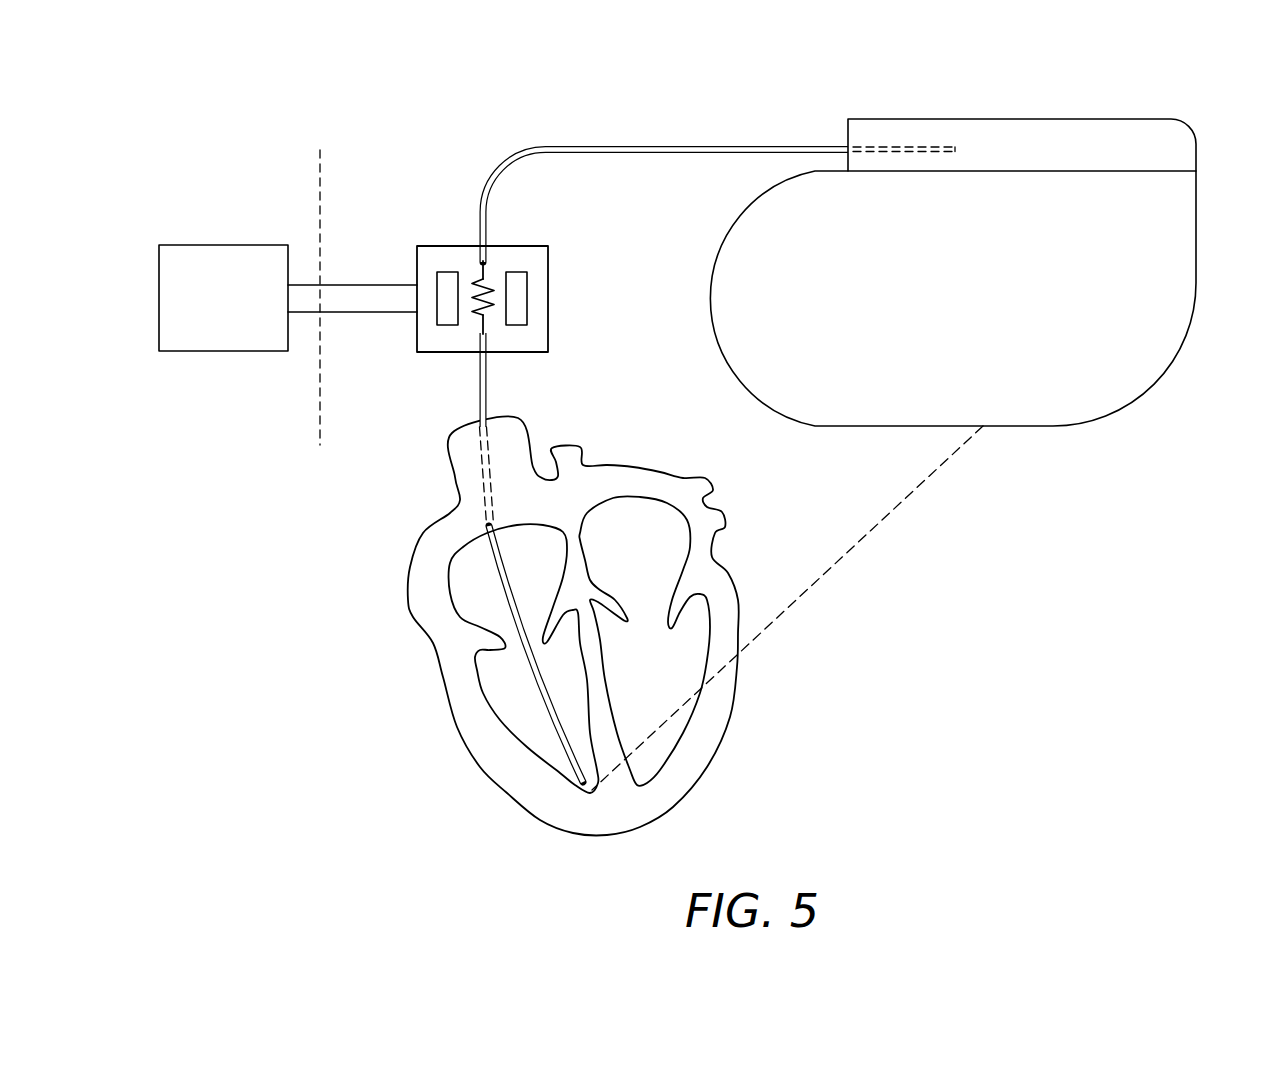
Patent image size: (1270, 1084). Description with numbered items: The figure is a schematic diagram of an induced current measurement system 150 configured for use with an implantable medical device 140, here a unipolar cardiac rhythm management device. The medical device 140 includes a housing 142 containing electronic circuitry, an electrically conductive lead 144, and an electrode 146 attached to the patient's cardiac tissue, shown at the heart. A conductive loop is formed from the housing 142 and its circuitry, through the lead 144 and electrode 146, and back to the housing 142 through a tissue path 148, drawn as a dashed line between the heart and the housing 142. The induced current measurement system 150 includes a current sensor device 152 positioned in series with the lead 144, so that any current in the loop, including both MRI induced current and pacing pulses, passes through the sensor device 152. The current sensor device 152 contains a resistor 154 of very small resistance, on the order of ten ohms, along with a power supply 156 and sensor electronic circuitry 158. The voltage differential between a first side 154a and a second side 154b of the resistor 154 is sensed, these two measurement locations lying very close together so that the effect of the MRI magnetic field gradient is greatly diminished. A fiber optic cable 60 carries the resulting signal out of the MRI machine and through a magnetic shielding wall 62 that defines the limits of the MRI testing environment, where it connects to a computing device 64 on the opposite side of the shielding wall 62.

The fiber optic cable 60 is at (357, 300).
The magnetic shielding wall 62 is at (318, 421).
The computing device 64 is at (225, 353).
The medical device 140 is at (605, 132).
The housing 142 is at (1197, 239).
The lead 144 is at (718, 145).
The electrode 146 is at (588, 792).
The tissue path 148 is at (853, 544).
The induced current measurement system 150 is at (352, 249).
The current sensor device 152 is at (510, 301).
The resistor 154 is at (485, 314).
The first side of resistor 154a is at (485, 262).
The second side of resistor 154b is at (488, 334).
The power supply 156 is at (528, 297).
The sensor electronic circuitry 158 is at (450, 271).